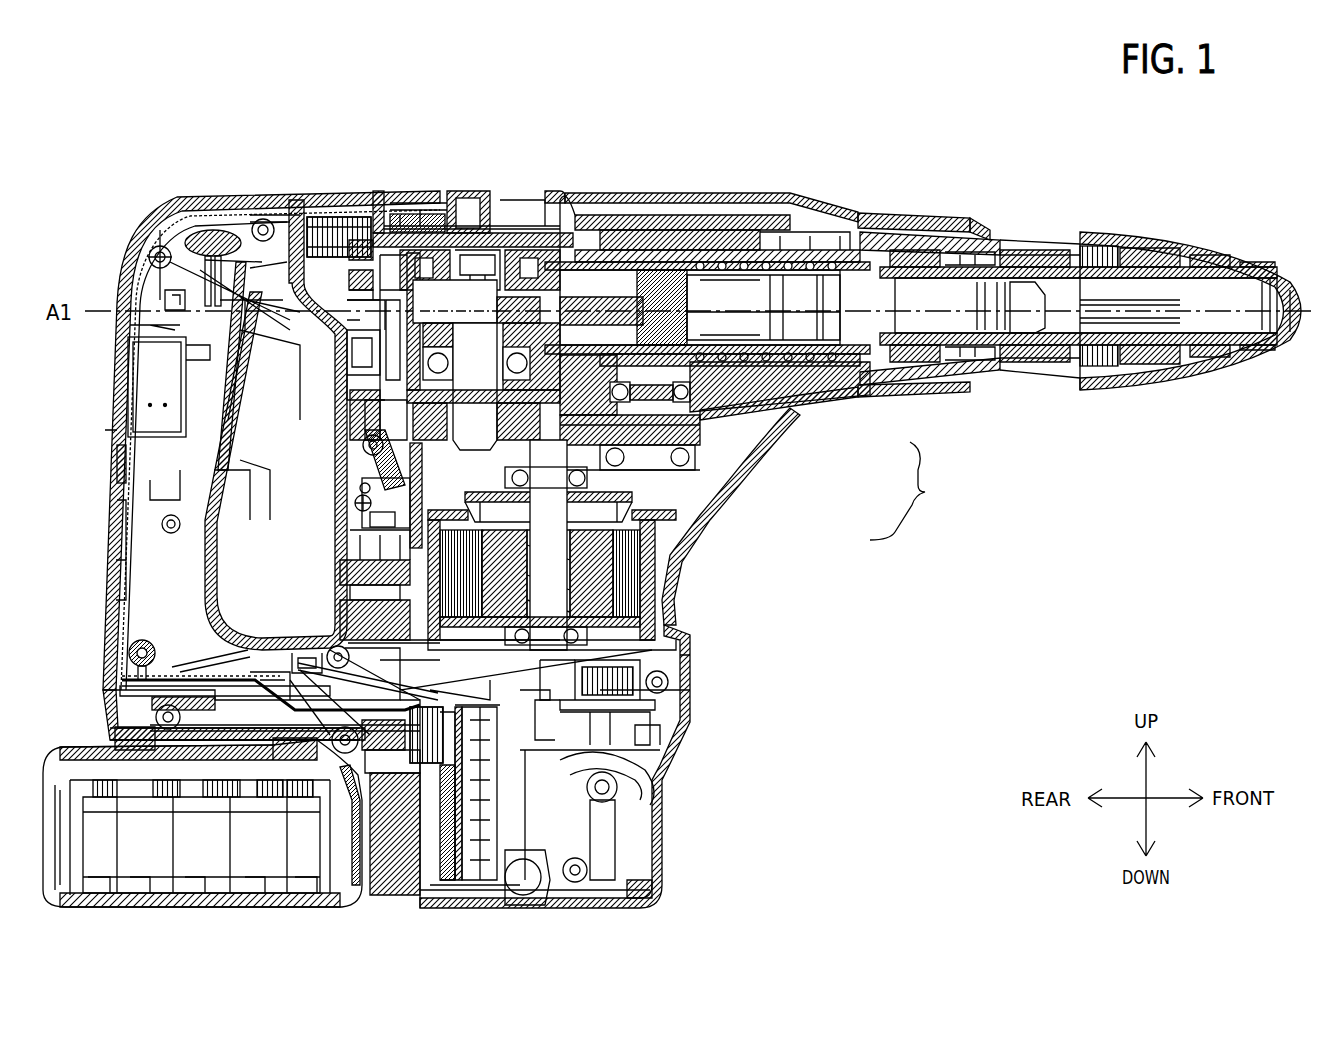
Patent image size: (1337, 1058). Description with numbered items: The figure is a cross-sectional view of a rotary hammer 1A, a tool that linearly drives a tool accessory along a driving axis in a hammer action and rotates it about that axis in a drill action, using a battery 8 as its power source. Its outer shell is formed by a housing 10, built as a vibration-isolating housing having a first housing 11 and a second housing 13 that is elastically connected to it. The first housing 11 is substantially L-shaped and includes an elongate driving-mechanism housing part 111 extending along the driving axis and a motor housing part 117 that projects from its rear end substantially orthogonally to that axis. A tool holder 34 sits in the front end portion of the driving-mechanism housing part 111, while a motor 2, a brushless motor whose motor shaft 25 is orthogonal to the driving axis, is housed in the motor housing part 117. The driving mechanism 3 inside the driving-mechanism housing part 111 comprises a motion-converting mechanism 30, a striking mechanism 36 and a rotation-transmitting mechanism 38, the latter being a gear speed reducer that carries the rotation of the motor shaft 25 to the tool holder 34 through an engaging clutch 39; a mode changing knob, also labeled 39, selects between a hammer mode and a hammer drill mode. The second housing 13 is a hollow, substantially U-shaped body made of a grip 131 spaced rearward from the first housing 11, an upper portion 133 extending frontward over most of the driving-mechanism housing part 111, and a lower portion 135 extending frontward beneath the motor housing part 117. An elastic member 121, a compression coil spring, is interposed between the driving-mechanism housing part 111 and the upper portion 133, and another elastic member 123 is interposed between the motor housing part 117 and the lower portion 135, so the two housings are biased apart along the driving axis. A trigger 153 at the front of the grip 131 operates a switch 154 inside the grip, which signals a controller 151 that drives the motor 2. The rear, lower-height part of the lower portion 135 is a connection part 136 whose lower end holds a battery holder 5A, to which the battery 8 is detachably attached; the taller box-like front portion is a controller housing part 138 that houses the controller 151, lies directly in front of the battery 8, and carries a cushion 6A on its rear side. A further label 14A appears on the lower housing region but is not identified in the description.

The rotary hammer 1A is at (934, 627).
The motor 2 is at (665, 545).
The driving mechanism 3 is at (570, 186).
The battery holder 5A is at (188, 690).
The cushion 6A is at (402, 890).
The battery 8 is at (94, 754).
The housing 10 is at (829, 182).
The first housing 11 is at (916, 491).
The second housing 13 is at (124, 189).
The lower housing portion 14A is at (92, 681).
The motor shaft 25 is at (625, 582).
The motion-converting mechanism 30 is at (364, 345).
The tool holder 34 is at (1140, 230).
The striking mechanism 36 is at (898, 232).
The rotation-transmitting mechanism 38 is at (717, 464).
The clutch 39 is at (443, 204).
The driving-mechanism housing part 111 is at (822, 408).
The motor housing part 117 is at (778, 468).
The elastic member 121 is at (330, 228).
The elastic member 123 is at (665, 680).
The grip 131 is at (135, 479).
The upper portion 133 is at (645, 194).
The lower portion 135 is at (725, 807).
The connection part 136 is at (270, 662).
The controller housing part 138 is at (642, 762).
The controller 151 is at (498, 792).
The trigger 153 is at (226, 420).
The switch 154 is at (137, 370).